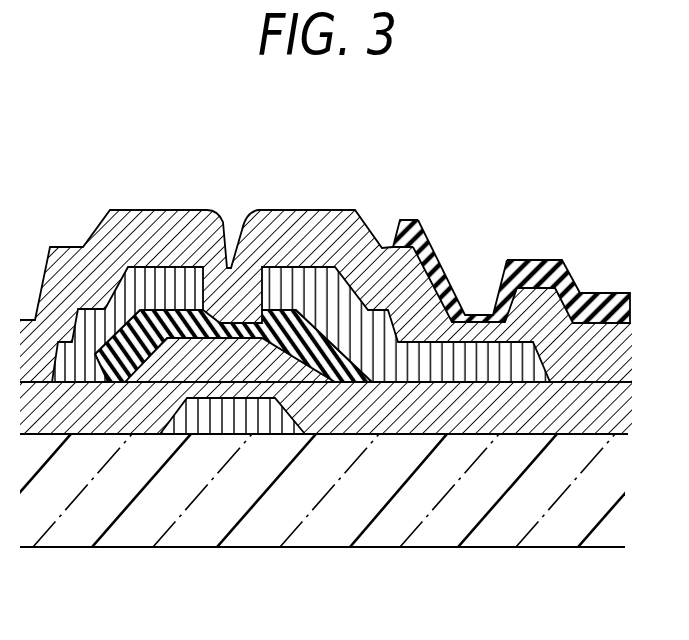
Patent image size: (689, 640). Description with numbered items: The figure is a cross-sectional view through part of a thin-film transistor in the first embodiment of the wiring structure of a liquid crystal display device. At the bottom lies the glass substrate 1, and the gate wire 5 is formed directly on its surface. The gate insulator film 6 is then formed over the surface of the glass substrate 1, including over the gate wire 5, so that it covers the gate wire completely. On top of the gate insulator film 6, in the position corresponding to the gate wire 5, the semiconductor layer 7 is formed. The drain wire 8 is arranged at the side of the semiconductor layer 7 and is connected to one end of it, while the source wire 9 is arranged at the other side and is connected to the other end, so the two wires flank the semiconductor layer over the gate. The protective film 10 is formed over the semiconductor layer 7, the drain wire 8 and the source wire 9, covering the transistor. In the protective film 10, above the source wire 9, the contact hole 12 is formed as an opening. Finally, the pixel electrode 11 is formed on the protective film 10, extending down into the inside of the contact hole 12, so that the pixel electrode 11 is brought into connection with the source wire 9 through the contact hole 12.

The glass substrate 1 is at (88, 512).
The gate wire 5 is at (220, 433).
The gate insulator film 6 is at (468, 413).
The semiconductor layer 7 is at (346, 362).
The drain wire 8 is at (155, 287).
The source wire 9 is at (302, 283).
The protective film 10 is at (182, 227).
The pixel electrode 11 is at (537, 268).
The contact hole 12 is at (482, 300).